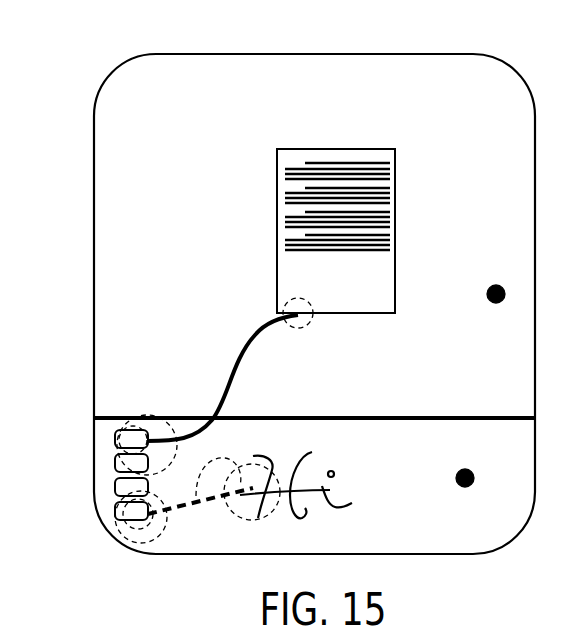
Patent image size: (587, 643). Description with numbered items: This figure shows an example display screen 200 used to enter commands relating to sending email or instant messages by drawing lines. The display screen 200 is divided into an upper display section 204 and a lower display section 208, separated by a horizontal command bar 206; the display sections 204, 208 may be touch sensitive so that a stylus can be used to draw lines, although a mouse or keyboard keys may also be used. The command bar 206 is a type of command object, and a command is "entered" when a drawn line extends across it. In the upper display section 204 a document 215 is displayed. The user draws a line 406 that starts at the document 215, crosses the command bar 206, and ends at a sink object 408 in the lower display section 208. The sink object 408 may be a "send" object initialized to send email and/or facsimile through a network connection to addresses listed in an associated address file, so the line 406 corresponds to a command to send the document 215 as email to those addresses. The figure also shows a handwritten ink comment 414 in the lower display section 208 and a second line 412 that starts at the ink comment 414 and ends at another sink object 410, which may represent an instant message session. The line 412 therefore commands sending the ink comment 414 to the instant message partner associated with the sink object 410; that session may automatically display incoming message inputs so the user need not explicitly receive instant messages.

The display screen 200 is at (78, 70).
The display section 204 is at (494, 284).
The command bar 206 is at (470, 416).
The display section 208 is at (463, 490).
The document 215 is at (335, 148).
The line 406 is at (240, 370).
The sink object 408 is at (115, 438).
The sink object 410 is at (115, 508).
The line 412 is at (218, 460).
The ink comment 414 is at (350, 493).